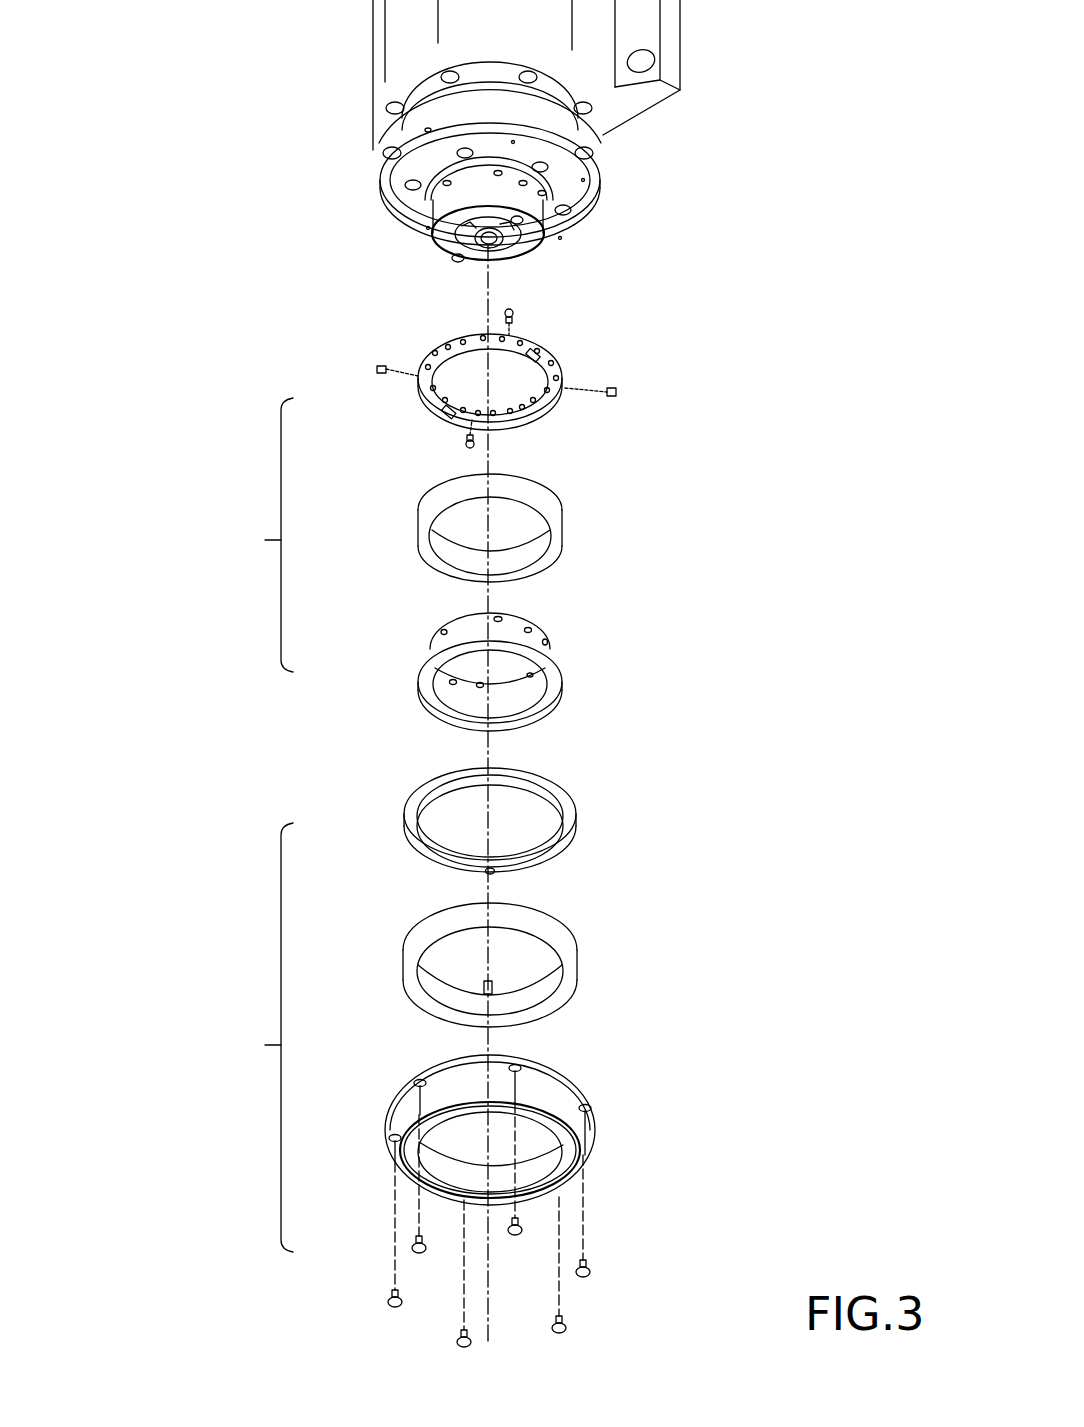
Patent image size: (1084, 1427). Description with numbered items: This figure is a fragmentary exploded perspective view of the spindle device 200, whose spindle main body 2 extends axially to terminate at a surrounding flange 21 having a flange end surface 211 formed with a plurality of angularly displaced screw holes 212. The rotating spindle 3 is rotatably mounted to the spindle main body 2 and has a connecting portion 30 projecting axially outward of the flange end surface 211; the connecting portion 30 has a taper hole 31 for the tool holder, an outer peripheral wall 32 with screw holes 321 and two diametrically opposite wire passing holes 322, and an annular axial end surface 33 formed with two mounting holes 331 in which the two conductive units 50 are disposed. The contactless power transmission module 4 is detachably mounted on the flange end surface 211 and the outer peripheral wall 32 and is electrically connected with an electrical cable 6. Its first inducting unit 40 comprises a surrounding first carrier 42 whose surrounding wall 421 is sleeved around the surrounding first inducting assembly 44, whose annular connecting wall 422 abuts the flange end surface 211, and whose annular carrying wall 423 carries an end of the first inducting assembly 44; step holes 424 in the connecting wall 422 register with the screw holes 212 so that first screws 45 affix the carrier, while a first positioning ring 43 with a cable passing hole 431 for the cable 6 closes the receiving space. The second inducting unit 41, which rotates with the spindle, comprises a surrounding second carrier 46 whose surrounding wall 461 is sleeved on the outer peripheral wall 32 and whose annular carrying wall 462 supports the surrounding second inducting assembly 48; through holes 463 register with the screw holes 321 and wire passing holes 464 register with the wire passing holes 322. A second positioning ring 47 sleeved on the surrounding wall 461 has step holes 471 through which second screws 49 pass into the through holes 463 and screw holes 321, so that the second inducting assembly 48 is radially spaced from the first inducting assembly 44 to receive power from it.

The spindle device 200 is at (140, 38).
The spindle main body 2 is at (428, 110).
The surrounding flange 21 is at (400, 180).
The flange end surface 211 is at (393, 205).
The screw holes 212 is at (418, 155).
The rotating spindle 3 is at (516, 214).
The outer peripheral wall 32 is at (405, 213).
The screw holes 321 is at (445, 181).
The wire passing holes 322 is at (502, 172).
The connecting portion 30 is at (549, 202).
The axial end surface 33 is at (523, 257).
The mounting holes 331 is at (455, 266).
The taper hole 31 is at (485, 252).
The conductive units 50 is at (530, 227).
The contactless power transmission module 4 is at (507, 393).
The second inducting unit 41 is at (257, 535).
The second positioning ring 47 is at (418, 390).
The step holes 471 is at (512, 343).
The second screws 49 is at (618, 392).
The surrounding second inducting assembly 48 is at (418, 522).
The surrounding second carrier 46 is at (496, 676).
The surrounding wall 461 is at (462, 630).
The annular carrying wall 462 is at (560, 702).
The through holes 463 is at (502, 620).
The wire passing holes 464 is at (530, 632).
The first inducting unit 40 is at (257, 1037).
The first positioning ring 43 is at (405, 816).
The cable passing hole 431 is at (496, 872).
The surrounding first inducting assembly 44 is at (403, 955).
The electrical cable 6 is at (493, 990).
The surrounding first carrier 42 is at (533, 1117).
The surrounding wall 421 is at (457, 1093).
The annular connecting wall 422 is at (395, 1123).
The annular carrying wall 423 is at (408, 1160).
The step holes 424 is at (521, 1069).
The first screws 45 is at (415, 1247).